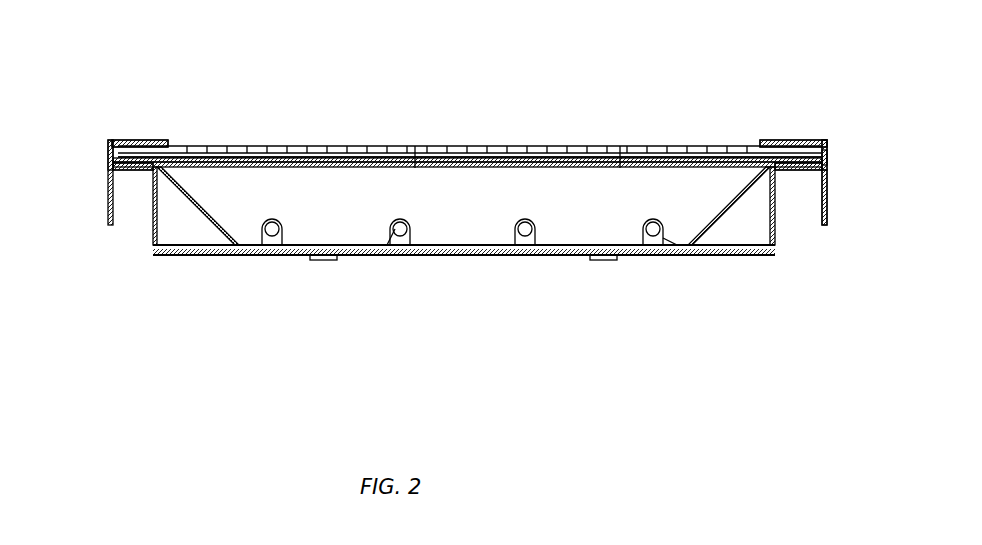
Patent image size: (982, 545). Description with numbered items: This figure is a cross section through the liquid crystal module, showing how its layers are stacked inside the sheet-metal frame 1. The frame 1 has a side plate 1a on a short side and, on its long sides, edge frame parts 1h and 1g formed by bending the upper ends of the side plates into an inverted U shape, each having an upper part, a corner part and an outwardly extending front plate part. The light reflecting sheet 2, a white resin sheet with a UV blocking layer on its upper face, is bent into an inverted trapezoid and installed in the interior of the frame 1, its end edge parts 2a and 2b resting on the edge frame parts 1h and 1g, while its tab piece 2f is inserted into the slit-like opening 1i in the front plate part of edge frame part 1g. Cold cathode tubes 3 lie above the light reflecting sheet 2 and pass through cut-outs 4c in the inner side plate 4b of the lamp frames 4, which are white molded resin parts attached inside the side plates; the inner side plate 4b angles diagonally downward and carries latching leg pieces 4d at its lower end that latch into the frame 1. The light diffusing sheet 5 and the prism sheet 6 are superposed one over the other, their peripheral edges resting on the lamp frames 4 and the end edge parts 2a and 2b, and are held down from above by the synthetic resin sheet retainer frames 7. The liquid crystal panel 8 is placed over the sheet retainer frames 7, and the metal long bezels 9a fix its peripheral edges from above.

The frame 1 is at (185, 257).
The left side plate 1a is at (740, 240).
The edge frame part 1g is at (781, 186).
The edge frame part 1h is at (135, 182).
The slit-like opening 1i is at (830, 160).
The light reflecting sheet 2 is at (527, 250).
The end edge part 2a is at (826, 143).
The end edge part 2b is at (112, 140).
The tab piece 2f is at (797, 176).
The cold cathode tubes 3 is at (372, 252).
The lamp frames 4 is at (416, 153).
The inner side plate 4b is at (463, 236).
The cut-outs 4c is at (400, 246).
The latching leg pieces 4d is at (322, 262).
The light diffusing sheet 5 is at (620, 165).
The prism sheet 6 is at (518, 152).
The sheet retainer frames 7 is at (136, 140).
The liquid crystal panel 8 is at (338, 146).
The long bezels 9a is at (160, 140).